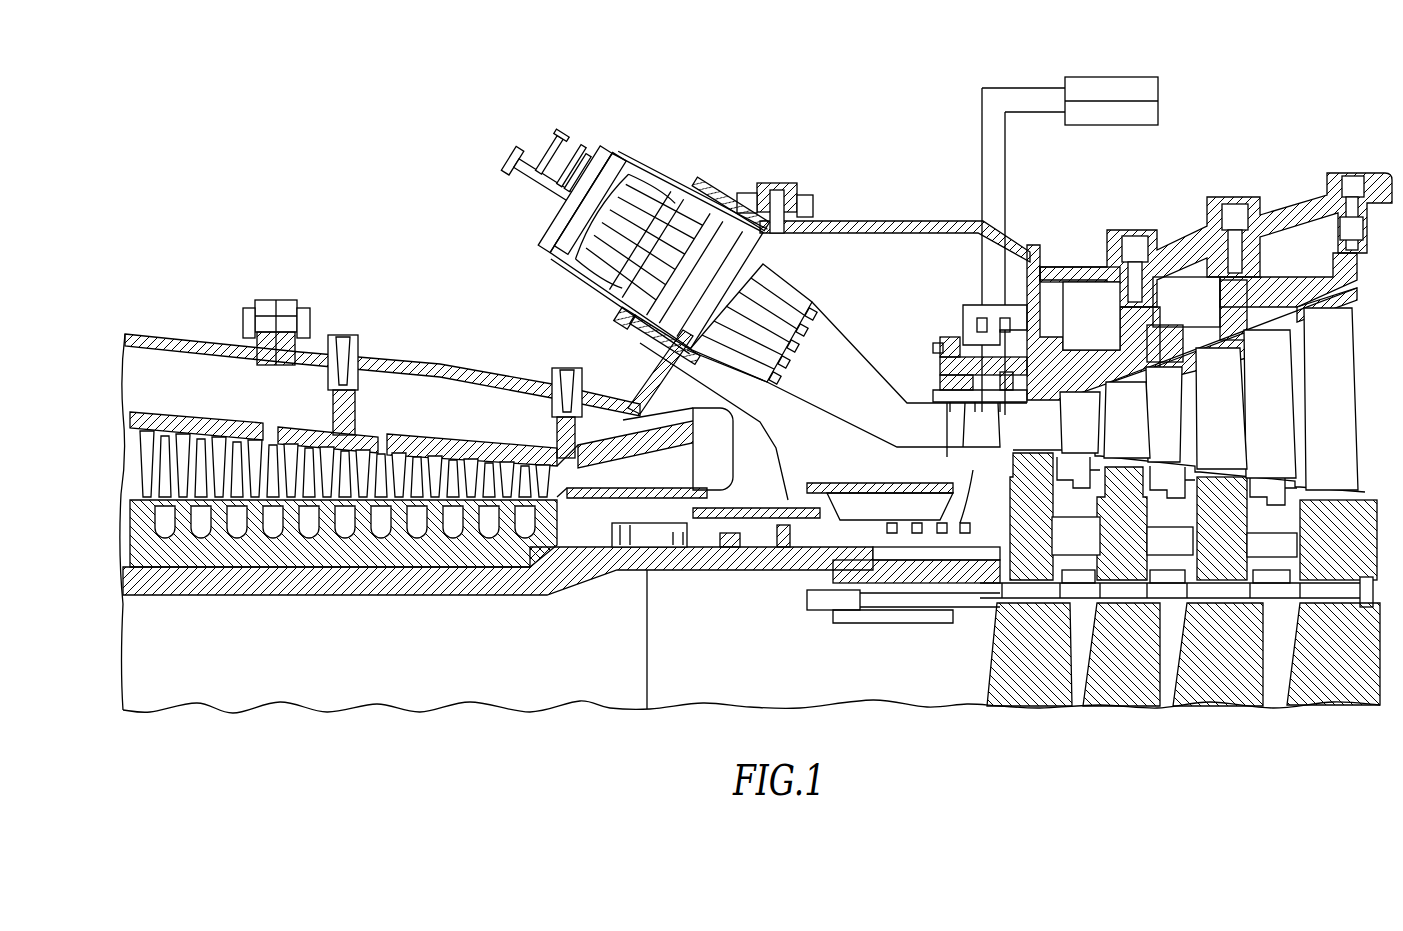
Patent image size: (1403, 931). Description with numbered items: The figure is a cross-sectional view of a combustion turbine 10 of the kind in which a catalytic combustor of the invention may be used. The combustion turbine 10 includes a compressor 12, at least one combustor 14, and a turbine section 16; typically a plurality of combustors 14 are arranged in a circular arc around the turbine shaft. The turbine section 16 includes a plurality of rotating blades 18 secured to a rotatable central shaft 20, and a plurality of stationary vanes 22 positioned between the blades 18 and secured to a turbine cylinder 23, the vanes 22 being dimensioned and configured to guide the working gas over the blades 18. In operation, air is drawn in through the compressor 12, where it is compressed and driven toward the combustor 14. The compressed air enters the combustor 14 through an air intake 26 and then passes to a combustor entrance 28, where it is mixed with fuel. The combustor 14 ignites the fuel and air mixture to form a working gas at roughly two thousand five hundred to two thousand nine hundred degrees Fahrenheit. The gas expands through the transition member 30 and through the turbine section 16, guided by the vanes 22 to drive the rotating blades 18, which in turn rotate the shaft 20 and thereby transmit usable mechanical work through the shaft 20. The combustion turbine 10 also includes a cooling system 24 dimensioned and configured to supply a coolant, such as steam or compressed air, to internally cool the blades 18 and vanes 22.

The combustion turbine 10 is at (868, 120).
The compressor 12 is at (265, 291).
The combustor 14 is at (669, 283).
The turbine section 16 is at (1186, 389).
The rotating blades 18 is at (1134, 422).
The rotatable central shaft 20 is at (765, 565).
The stationary vanes 22 is at (1091, 417).
The turbine cylinder 23 is at (1095, 353).
The cooling system 24 is at (1125, 77).
The air intake 26 is at (760, 247).
The combustor entrance 28 is at (623, 207).
The transition member 30 is at (843, 350).